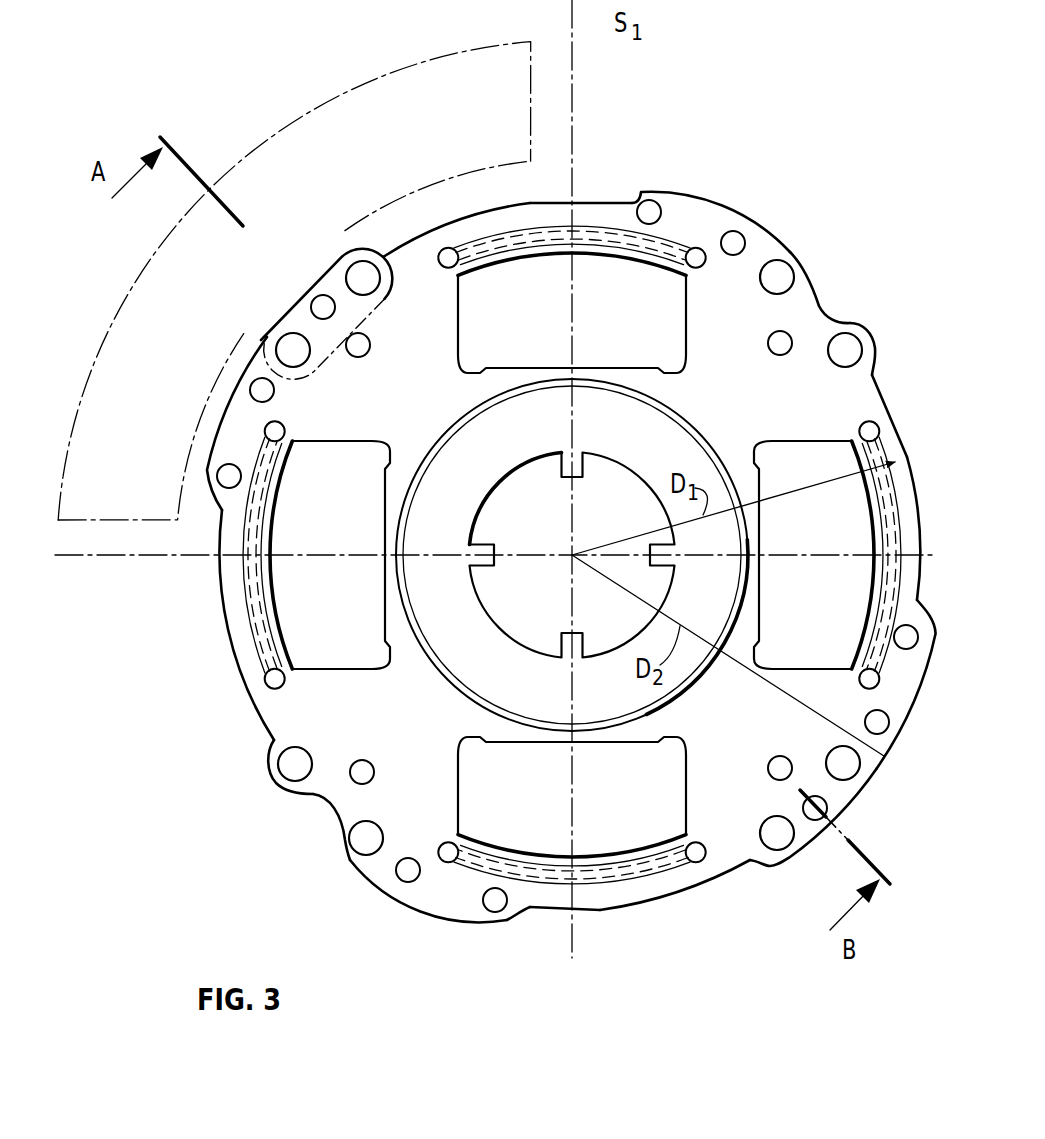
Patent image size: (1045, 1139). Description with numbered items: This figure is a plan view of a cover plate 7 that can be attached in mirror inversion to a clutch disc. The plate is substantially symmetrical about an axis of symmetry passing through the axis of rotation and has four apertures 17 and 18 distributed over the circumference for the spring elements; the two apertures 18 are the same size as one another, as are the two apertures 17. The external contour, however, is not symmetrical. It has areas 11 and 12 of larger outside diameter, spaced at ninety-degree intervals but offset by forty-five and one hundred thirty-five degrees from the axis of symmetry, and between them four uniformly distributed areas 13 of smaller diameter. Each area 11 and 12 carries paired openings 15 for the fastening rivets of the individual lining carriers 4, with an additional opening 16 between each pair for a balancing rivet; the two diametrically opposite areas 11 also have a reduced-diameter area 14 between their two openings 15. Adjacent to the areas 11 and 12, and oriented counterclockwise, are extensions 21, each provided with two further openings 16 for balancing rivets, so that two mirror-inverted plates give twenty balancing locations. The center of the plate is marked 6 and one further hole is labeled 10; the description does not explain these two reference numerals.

The lining carrier 4 is at (360, 88).
The central axis 6 is at (572, 555).
The cover plate 7 is at (266, 712).
The hole 10 is at (768, 768).
The area with larger outside diameter 11 is at (872, 330).
The area with larger outside diameter 12 is at (292, 340).
The area with smaller diameter 13 is at (485, 200).
The area with smaller diameter 14 is at (826, 310).
The opening for fastening rivet 15 is at (778, 262).
The opening for balancing rivet 16 is at (646, 202).
The aperture 17 is at (462, 295).
The aperture 18 is at (797, 462).
The extension 21 is at (688, 190).